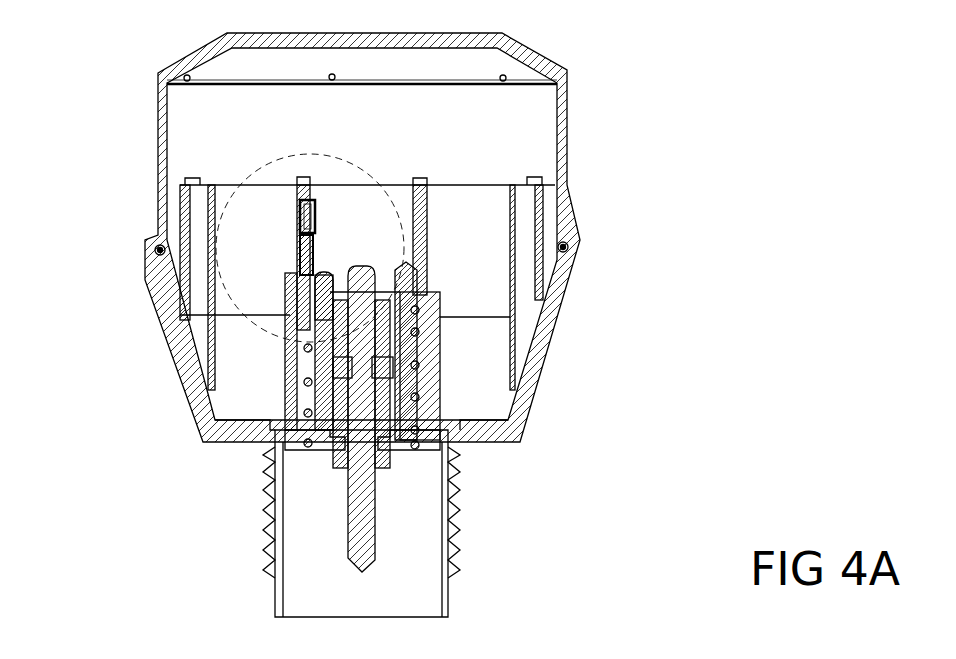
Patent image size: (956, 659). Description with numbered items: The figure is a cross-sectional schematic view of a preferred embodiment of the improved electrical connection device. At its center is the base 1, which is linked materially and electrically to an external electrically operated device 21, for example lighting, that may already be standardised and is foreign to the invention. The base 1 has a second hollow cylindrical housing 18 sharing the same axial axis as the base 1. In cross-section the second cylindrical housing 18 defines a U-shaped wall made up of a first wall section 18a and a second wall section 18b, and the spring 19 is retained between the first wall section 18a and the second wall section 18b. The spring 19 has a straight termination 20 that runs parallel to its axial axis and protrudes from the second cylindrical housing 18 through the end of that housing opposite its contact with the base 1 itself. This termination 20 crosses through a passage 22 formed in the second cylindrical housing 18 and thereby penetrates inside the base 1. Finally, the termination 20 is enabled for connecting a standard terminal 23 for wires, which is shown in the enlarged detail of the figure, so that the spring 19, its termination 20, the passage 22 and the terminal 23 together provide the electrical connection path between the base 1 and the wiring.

The base 1 is at (172, 392).
The second hollow cylindrical housing 18 is at (443, 297).
The first wall section 18a is at (396, 355).
The second wall section 18b is at (430, 385).
The spring 19 is at (440, 388).
The straight termination 20 is at (286, 243).
The external electrically operated device 21 is at (578, 118).
The passage 22 is at (286, 274).
The standard terminal 23 is at (286, 199).